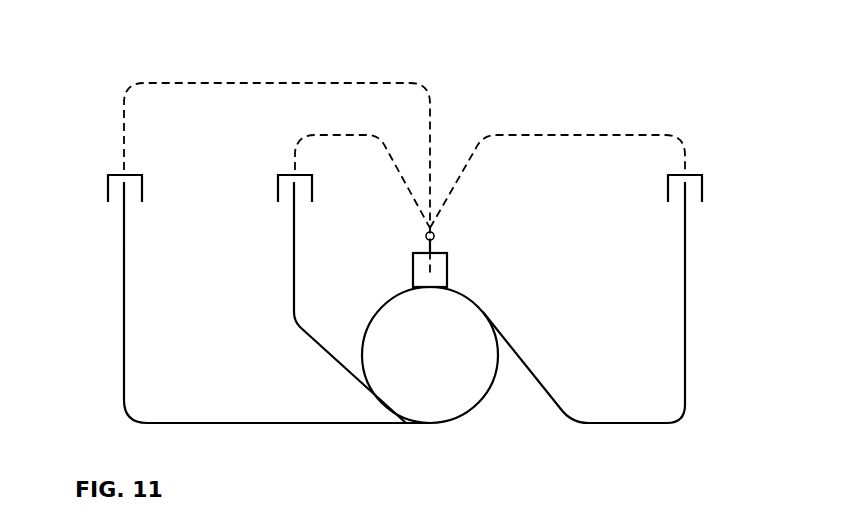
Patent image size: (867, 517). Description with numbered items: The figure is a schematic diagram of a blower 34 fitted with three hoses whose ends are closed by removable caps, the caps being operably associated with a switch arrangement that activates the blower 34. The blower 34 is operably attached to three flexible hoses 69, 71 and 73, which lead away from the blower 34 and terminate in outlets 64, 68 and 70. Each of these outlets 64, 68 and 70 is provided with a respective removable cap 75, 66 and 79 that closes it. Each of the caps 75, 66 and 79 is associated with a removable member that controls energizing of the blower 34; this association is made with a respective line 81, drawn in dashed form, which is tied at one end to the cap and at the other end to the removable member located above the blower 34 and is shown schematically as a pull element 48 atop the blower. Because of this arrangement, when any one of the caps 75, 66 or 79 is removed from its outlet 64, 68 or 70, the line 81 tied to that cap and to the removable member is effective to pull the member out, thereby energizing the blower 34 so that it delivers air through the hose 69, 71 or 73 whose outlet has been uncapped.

The blower 34 is at (466, 320).
The nozzle 48 is at (448, 258).
The outlet 64 is at (296, 216).
The removable cap 66 is at (280, 170).
The outlet 68 is at (125, 222).
The flexible hose 69 is at (627, 425).
The outlet 70 is at (687, 208).
The flexible hose 71 is at (296, 262).
The flexible hose 73 is at (122, 283).
The removable cap 75 is at (112, 170).
The removable cap 79 is at (690, 174).
The line 81 is at (190, 82).